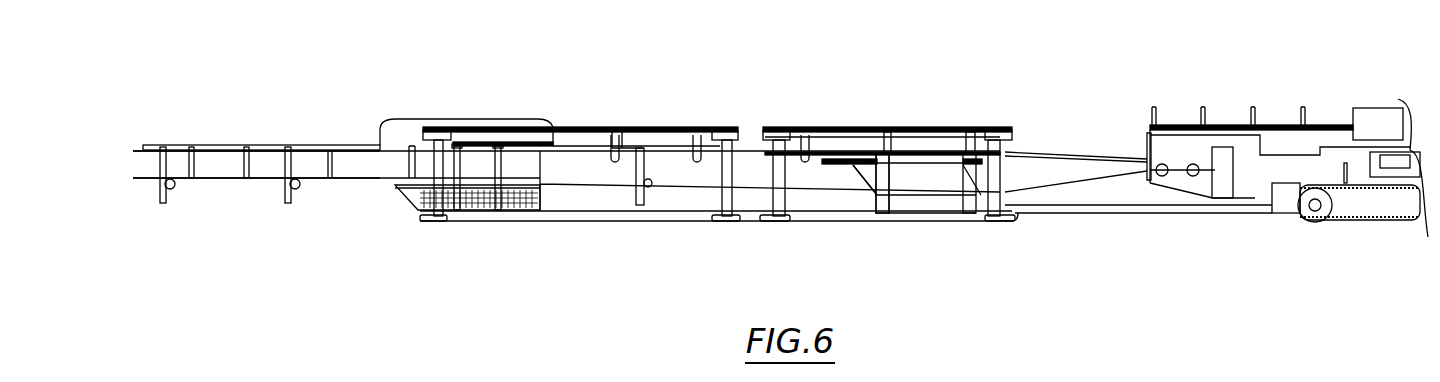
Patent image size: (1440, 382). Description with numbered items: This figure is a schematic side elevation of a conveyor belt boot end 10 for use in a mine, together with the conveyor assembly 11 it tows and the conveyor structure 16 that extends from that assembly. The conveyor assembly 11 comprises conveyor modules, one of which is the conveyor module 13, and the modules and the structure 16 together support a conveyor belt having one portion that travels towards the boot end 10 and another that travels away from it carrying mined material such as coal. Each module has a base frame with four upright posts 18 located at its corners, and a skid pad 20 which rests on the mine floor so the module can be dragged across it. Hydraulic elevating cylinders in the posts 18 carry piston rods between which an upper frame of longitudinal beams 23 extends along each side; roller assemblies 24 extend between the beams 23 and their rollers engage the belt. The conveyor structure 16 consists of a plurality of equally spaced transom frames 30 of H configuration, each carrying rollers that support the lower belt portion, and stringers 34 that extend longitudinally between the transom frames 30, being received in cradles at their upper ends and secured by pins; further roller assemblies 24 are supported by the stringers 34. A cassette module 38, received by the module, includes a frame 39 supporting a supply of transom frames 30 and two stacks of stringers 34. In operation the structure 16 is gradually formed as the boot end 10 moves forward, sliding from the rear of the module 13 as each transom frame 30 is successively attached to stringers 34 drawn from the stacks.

The conveyor belt boot end 10 is at (1350, 97).
The conveyor assembly 11 is at (917, 107).
The conveyor module 13 is at (617, 106).
The conveyor structure 16 is at (257, 103).
The upright post 18 is at (430, 222).
The skid pad 20 is at (675, 222).
The longitudinal beam 23 is at (845, 128).
The roller assembly 24 is at (190, 178).
The transom frame 30 is at (154, 211).
The stringer 34 is at (220, 145).
The cassette module 38 is at (886, 229).
The frame 39 is at (922, 222).